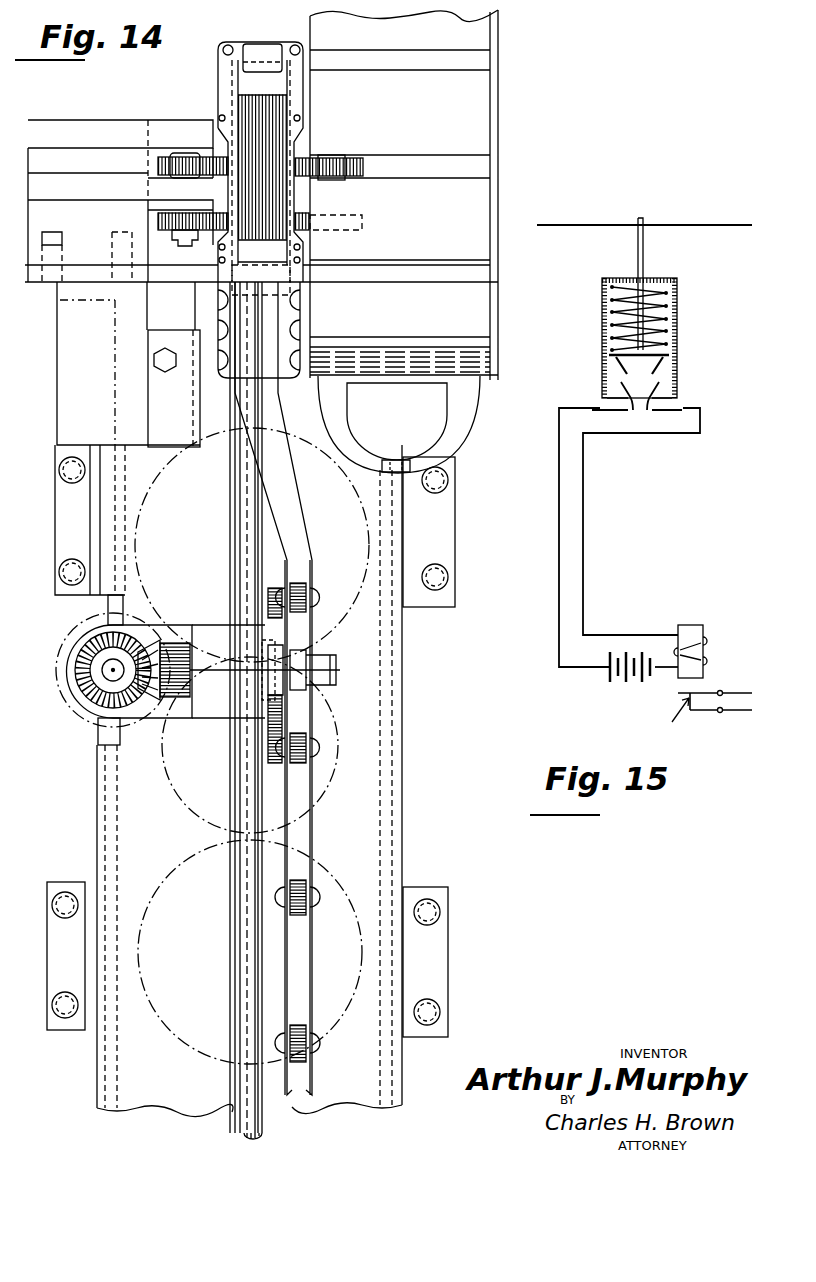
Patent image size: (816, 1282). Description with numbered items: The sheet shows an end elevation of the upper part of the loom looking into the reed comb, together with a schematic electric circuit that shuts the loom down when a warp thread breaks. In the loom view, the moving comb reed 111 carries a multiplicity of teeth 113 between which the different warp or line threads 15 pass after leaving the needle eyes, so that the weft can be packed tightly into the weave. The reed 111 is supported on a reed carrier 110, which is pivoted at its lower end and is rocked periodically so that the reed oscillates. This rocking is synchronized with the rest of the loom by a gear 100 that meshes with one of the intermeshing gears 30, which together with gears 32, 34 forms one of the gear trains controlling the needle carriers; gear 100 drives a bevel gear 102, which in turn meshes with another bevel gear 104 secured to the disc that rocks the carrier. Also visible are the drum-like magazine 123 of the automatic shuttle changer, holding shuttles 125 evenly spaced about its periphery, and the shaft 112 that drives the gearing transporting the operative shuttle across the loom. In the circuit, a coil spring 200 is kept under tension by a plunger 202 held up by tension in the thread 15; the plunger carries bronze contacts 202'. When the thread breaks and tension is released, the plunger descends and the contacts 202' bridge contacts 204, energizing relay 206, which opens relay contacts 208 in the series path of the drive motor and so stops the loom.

In FIG. 14, the intermeshing gear 30 is at (138, 533).
In FIG. 14, the intermeshing gear 32 is at (170, 785).
In FIG. 14, the intermeshing gear 34 is at (133, 956).
In FIG. 14, the gear 100 is at (62, 663).
In FIG. 14, the bevel gear 102 is at (92, 688).
In FIG. 14, the bevel gear 104 is at (162, 705).
In FIG. 14, the reed carrier 110 is at (302, 808).
In FIG. 14, the comb reed 111 is at (250, 86).
In FIG. 14, the shaft 112 is at (238, 1122).
In FIG. 14, the teeth 113 is at (272, 133).
In FIG. 14, the drum-like magazine 123 is at (498, 96).
In FIG. 14, the shuttle 125 is at (458, 408).
In FIG. 15, the warp or line thread 15 is at (693, 225).
In FIG. 15, the coil spring 200 is at (678, 293).
In FIG. 15, the plunger 202 is at (676, 359).
In FIG. 15, the bronze contacts 202' is at (648, 377).
In FIG. 15, the bridge contacts 204 is at (637, 412).
In FIG. 15, the relay 206 is at (700, 628).
In FIG. 15, the relay contacts 208 is at (690, 718).